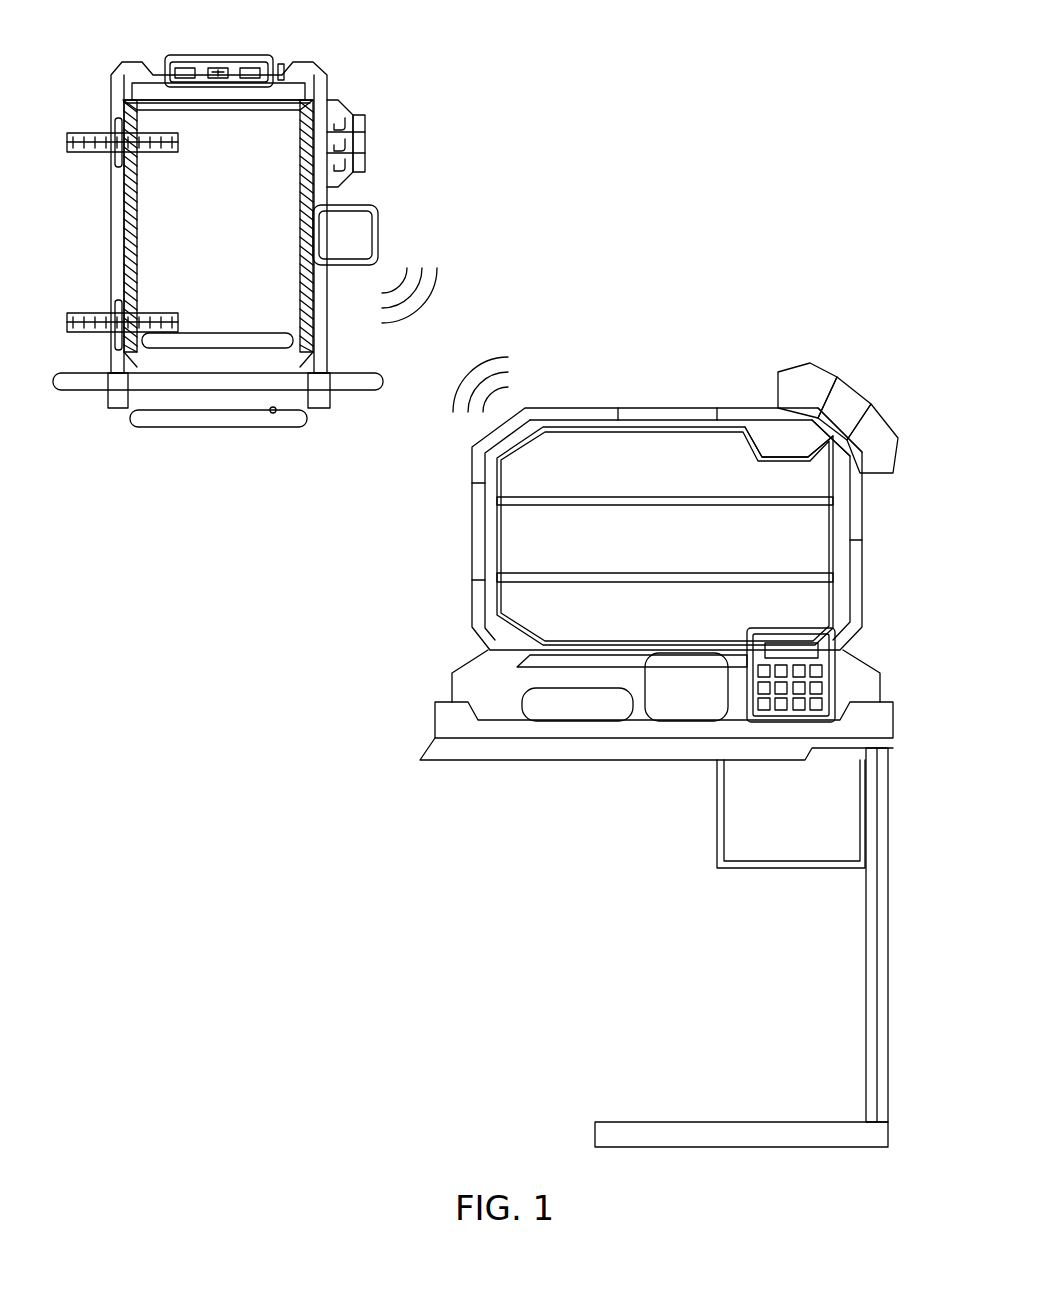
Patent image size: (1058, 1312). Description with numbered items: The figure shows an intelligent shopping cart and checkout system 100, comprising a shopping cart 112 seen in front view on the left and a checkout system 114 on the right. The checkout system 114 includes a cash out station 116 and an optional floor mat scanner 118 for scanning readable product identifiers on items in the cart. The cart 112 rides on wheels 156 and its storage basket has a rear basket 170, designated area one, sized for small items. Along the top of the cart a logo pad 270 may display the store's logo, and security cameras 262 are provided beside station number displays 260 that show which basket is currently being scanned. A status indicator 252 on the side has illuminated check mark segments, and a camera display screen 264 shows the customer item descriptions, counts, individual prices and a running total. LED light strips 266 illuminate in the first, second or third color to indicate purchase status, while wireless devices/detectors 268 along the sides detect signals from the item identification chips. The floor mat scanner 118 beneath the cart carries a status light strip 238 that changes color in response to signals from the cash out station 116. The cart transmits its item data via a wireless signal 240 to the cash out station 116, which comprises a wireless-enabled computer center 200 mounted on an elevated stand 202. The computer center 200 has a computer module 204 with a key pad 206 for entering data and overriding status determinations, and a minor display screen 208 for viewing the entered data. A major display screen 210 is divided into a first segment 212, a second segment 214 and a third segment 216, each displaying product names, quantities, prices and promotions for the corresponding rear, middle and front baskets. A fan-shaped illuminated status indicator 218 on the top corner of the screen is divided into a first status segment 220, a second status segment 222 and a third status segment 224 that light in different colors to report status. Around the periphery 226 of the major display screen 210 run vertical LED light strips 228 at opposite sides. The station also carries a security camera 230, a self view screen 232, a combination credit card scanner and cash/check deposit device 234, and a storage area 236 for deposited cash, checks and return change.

The intelligent shopping cart and checkout system 100 is at (729, 97).
The shopping cart 112 is at (116, 46).
The checkout system 114 is at (200, 648).
The cash out station 116 is at (862, 300).
The floor mat scanner 118 is at (215, 443).
The wheels 156 is at (118, 402).
The rear basket 170 is at (240, 232).
The computer center 200 is at (334, 671).
The stand 202 is at (887, 1000).
The computer module 204 is at (462, 690).
The key pad 206 is at (840, 654).
The minor display screen 208 is at (688, 708).
The major display screen 210 is at (522, 520).
The first segment 212 is at (690, 479).
The second segment 214 is at (690, 554).
The third segment 216 is at (690, 627).
The illuminated status indicator 218 is at (765, 373).
The first status segment 220 is at (893, 440).
The second status segment 222 is at (870, 402).
The third status segment 224 is at (826, 376).
The periphery 226 is at (559, 406).
The LED light strips 228 is at (640, 406).
The security camera 230 is at (842, 456).
The self view screen 232 is at (774, 440).
The combination credit card scanner and cash/check deposit device 234 is at (600, 712).
The storage area 236 is at (853, 804).
The status light strip 238 is at (273, 418).
The wireless signal 240 is at (453, 304).
The status indicator 252 is at (347, 108).
The station number displays 260 is at (283, 62).
The security cameras 262 is at (219, 66).
The camera display screen 264 is at (358, 228).
The LED light strips 266 is at (106, 134).
The wireless devices/detectors 268 is at (124, 236).
The logo pad 270 is at (128, 62).